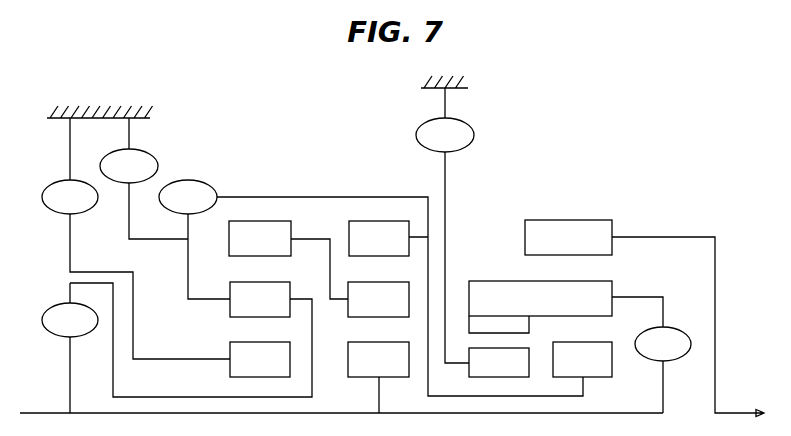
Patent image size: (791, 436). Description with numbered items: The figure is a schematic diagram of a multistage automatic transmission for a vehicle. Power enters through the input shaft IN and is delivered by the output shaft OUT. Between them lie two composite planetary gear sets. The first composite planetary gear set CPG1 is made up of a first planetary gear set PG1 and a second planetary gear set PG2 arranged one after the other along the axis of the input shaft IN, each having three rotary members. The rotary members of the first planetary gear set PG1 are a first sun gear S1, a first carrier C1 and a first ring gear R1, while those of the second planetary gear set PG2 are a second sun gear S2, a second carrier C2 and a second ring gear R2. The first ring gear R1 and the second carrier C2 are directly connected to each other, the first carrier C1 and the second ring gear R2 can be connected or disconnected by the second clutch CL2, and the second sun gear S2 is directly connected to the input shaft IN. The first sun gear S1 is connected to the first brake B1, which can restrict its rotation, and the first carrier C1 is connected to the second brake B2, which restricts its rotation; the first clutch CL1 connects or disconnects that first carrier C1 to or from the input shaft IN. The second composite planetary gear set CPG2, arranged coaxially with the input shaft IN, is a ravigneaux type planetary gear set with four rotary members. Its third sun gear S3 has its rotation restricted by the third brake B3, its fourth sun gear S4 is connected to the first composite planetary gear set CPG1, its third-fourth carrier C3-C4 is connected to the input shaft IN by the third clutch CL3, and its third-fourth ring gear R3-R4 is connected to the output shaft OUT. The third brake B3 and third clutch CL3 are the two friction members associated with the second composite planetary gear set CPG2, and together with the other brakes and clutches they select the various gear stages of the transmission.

The input shaft IN is at (341, 401).
The output shaft OUT is at (691, 327).
The first brake B1 is at (136, 238).
The second brake B2 is at (144, 178).
The third brake B3 is at (445, 225).
The first clutch CL1 is at (177, 348).
The second clutch CL2 is at (371, 288).
The third clutch CL3 is at (651, 355).
The first composite planetary gear set CPG1 is at (265, 119).
The second composite planetary gear set CPG2 is at (574, 215).
The first planetary gear set PG1 is at (257, 213).
The second planetary gear set PG2 is at (383, 213).
The first ring gear R1 is at (288, 260).
The first carrier C1 is at (260, 299).
The first sun gear S1 is at (260, 359).
The second ring gear R2 is at (379, 238).
The second carrier C2 is at (378, 299).
The second sun gear S2 is at (378, 377).
The third-fourth ring gear R3-R4 is at (568, 237).
The third-fourth carrier C3-C4 is at (540, 307).
The third sun gear S3 is at (499, 362).
The fourth sun gear S4 is at (582, 359).